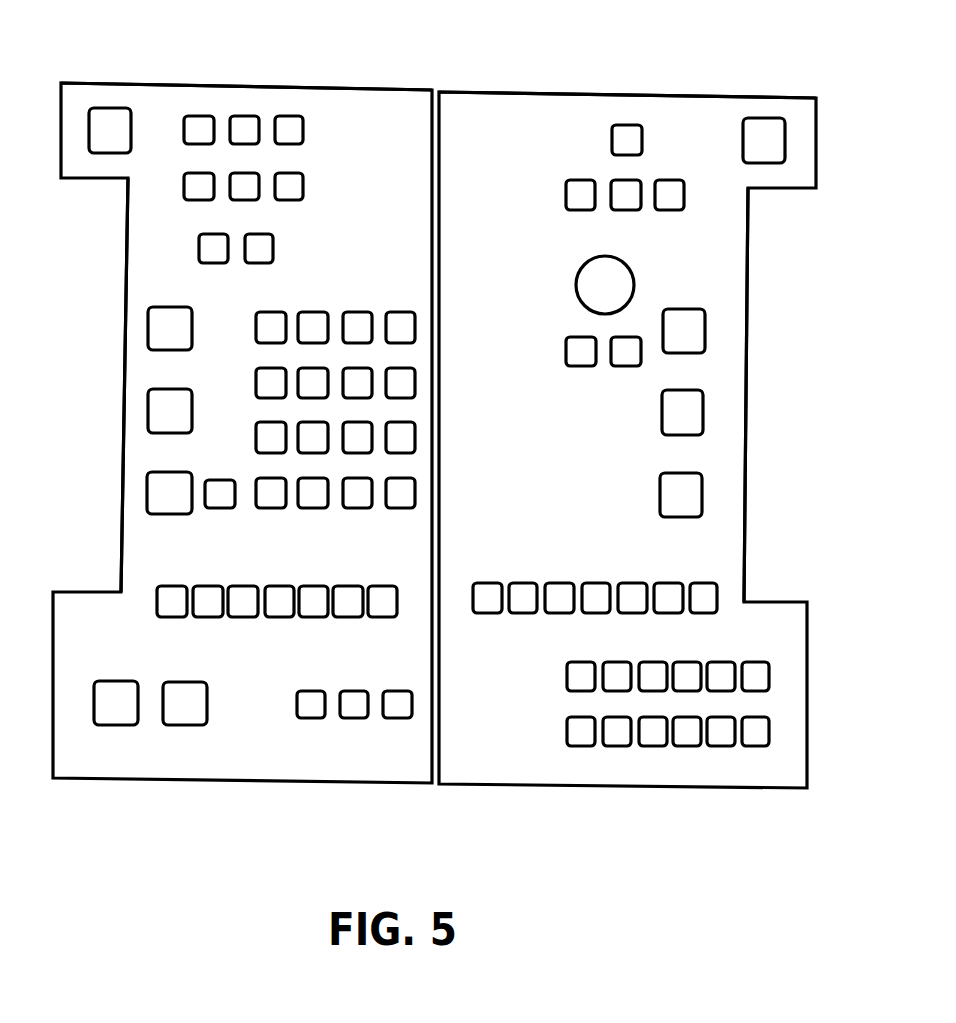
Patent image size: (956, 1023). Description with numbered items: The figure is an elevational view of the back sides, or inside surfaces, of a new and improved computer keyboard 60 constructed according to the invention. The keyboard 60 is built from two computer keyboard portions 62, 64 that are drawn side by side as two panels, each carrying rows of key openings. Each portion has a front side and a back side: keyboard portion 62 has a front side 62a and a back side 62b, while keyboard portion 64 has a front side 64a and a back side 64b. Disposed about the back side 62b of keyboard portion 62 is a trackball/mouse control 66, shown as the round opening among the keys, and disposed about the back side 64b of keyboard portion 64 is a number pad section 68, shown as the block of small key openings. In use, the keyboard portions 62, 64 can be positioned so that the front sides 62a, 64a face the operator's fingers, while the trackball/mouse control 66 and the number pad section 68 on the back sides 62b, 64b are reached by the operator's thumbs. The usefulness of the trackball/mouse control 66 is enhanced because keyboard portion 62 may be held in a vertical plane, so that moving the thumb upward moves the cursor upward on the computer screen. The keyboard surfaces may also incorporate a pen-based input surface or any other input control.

The computer keyboard 60 is at (437, 431).
The computer keyboard portion 62 is at (643, 402).
The front side 62a is at (623, 97).
The back side 62b is at (730, 366).
The computer keyboard portion 64 is at (229, 395).
The front side 64a is at (217, 83).
The back side 64b is at (143, 288).
The trackball/mouse control 66 is at (636, 285).
The number pad section 68 is at (358, 312).